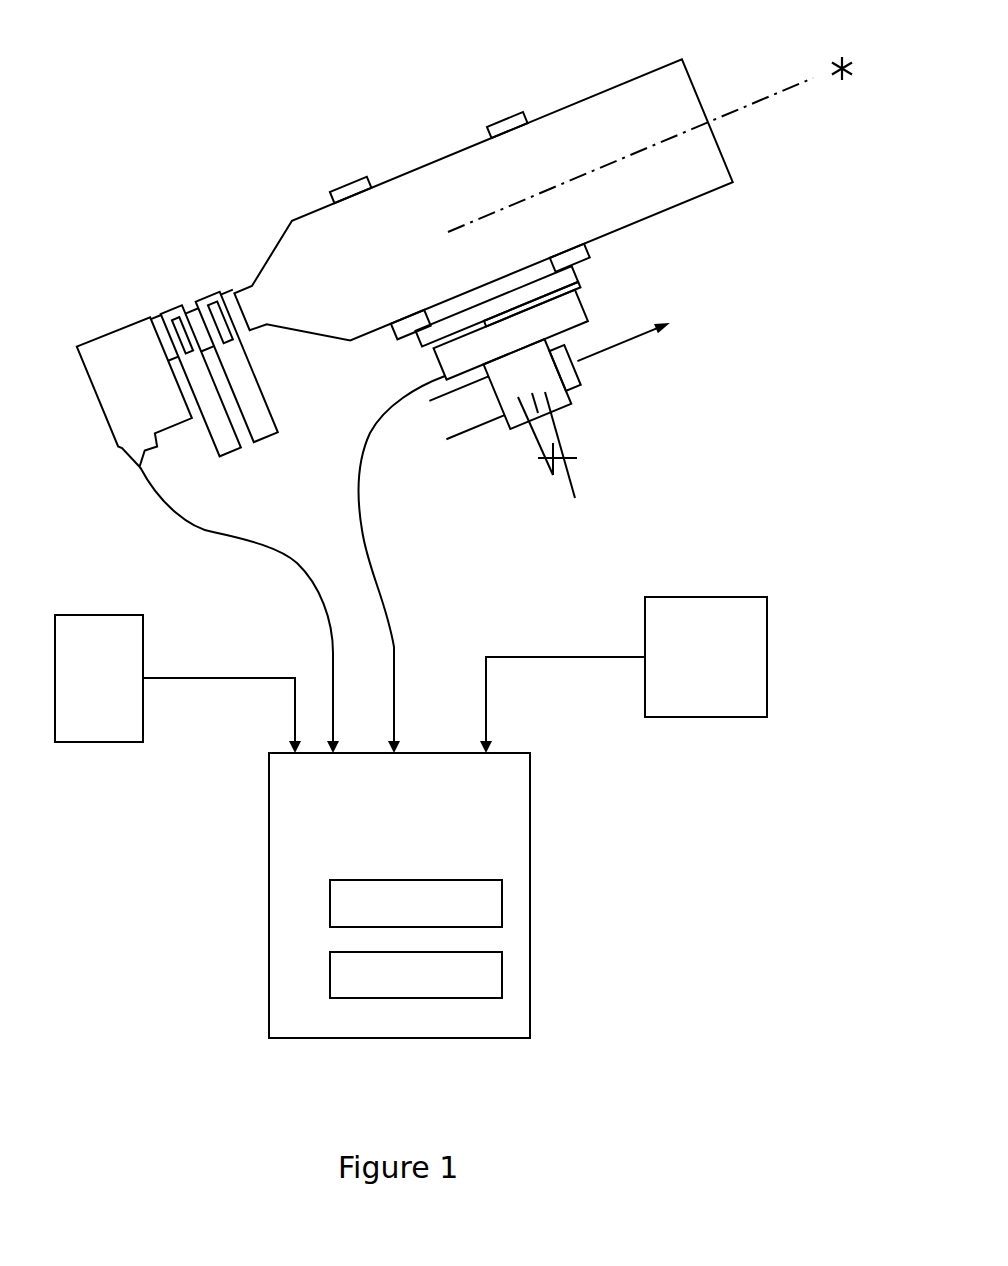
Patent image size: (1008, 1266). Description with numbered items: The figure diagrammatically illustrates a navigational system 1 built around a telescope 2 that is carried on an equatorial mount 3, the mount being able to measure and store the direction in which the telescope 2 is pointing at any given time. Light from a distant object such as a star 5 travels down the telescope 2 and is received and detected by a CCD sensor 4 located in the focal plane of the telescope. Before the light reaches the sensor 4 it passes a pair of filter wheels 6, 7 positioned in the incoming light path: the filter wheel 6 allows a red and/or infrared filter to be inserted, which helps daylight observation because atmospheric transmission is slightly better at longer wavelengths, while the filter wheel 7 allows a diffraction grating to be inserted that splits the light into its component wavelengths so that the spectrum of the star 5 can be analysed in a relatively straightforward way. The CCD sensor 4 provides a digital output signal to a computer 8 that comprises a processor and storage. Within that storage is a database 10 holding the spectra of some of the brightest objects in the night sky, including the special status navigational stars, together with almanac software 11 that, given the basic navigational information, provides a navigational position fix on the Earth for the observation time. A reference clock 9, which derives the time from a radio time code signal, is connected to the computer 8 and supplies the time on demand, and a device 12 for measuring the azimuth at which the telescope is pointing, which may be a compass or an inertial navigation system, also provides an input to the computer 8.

The navigational system 1 is at (752, 489).
The telescope 2 is at (590, 98).
The equatorial mount 3 is at (578, 348).
The CCD sensor 4 is at (112, 332).
The star 5 is at (843, 84).
The filter wheel 6 is at (267, 433).
The filter wheel 7 is at (233, 453).
The computer 8 is at (530, 810).
The reference clock 9 is at (767, 655).
The database 10 is at (502, 910).
The almanac software 11 is at (502, 980).
The azimuth measuring device 12 is at (93, 620).